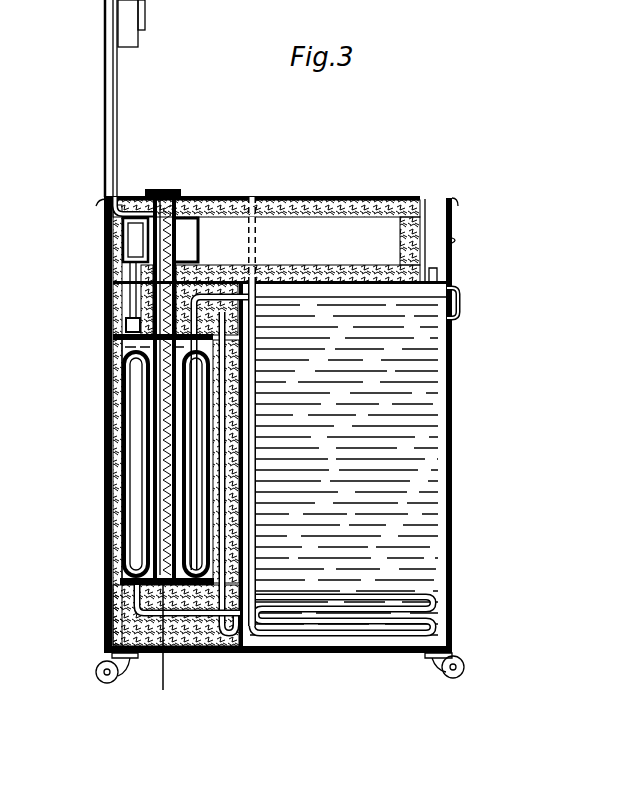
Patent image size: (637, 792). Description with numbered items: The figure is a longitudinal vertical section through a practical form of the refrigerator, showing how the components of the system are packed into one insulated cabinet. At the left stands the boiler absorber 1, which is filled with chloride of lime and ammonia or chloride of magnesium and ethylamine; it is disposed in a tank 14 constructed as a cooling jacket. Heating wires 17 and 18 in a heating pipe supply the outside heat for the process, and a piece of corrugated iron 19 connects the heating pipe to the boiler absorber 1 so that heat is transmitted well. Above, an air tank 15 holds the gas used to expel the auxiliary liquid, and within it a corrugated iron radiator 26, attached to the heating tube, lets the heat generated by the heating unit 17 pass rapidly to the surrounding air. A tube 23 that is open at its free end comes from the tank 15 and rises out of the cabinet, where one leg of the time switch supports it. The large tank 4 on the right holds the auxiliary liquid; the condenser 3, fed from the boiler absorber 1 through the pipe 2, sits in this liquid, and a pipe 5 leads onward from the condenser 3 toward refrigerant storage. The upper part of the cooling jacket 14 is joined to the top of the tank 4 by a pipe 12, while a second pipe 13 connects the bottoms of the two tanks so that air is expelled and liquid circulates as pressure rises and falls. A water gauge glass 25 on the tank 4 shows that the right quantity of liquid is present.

The boiler absorber 1 is at (131, 393).
The pipe 2 is at (160, 197).
The condenser 3 is at (440, 612).
The tank for the auxiliary liquid 4 is at (447, 468).
The pipe 5 is at (281, 197).
The pipe 12 is at (222, 647).
The pipe 13 is at (179, 647).
The tank 14 is at (113, 446).
The air tank 15 is at (229, 233).
The heating wire 17 is at (150, 233).
The heating wire 18 is at (164, 470).
The piece of corrugated iron 19 is at (150, 508).
The tube 23 is at (118, 104).
The water gauge glass 25 is at (458, 301).
The corrugated iron radiator 26 is at (188, 228).